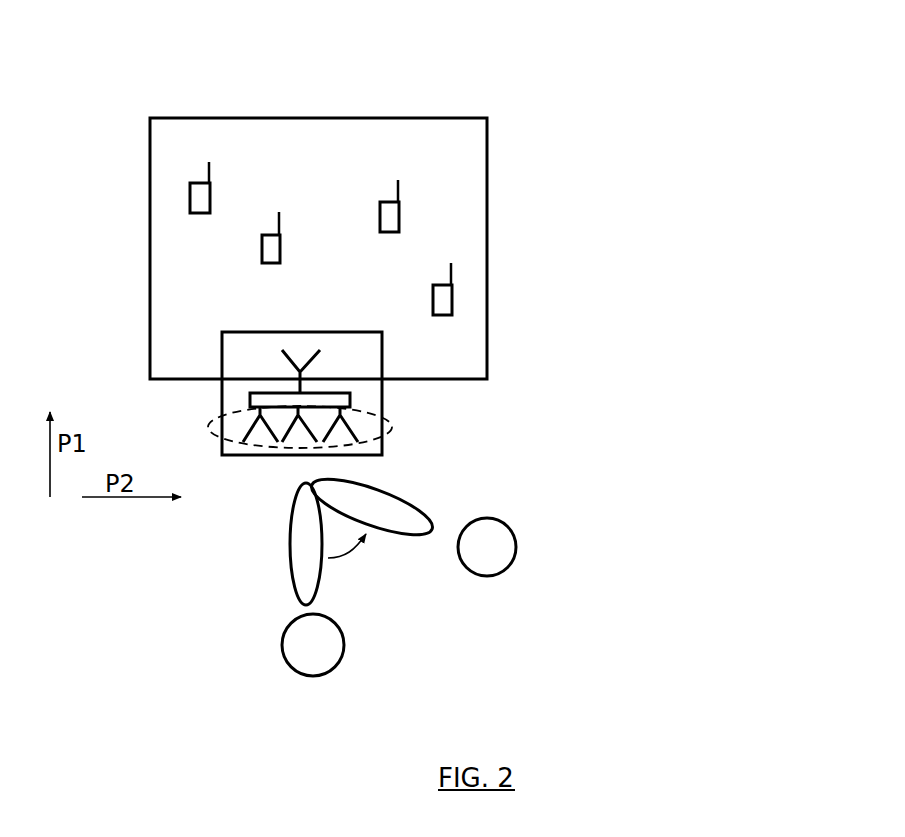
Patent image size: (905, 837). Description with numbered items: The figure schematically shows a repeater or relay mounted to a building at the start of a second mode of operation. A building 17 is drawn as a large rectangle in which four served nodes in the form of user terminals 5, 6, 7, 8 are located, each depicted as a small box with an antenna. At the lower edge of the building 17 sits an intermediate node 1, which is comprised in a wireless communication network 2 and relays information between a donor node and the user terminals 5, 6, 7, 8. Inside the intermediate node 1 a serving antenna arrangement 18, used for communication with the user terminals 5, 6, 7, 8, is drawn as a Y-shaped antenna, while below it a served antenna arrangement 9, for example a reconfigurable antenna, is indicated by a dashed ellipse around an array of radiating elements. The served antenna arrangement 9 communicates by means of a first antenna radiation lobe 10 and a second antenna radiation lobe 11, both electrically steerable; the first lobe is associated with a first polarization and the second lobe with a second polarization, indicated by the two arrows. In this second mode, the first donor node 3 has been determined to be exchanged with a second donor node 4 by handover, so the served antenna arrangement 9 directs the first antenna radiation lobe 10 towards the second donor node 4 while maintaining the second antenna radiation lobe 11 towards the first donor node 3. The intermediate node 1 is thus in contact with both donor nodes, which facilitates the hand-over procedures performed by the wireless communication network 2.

The intermediate node 1 is at (370, 403).
The wireless communication network 2 is at (220, 55).
The first donor node 3 is at (312, 645).
The second donor node 4 is at (497, 551).
The user terminal 5 is at (203, 202).
The user terminal 6 is at (272, 257).
The user terminal 7 is at (388, 212).
The user terminal 8 is at (447, 303).
The served antenna arrangement 9 is at (392, 442).
The first antenna radiation lobe 10 is at (382, 503).
The second antenna radiation lobe 11 is at (303, 564).
The building 17 is at (428, 118).
The serving antenna arrangement 18 is at (283, 363).